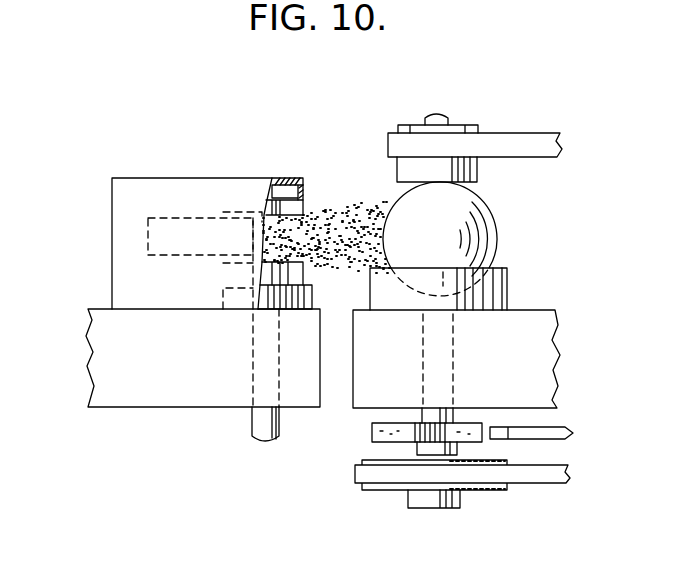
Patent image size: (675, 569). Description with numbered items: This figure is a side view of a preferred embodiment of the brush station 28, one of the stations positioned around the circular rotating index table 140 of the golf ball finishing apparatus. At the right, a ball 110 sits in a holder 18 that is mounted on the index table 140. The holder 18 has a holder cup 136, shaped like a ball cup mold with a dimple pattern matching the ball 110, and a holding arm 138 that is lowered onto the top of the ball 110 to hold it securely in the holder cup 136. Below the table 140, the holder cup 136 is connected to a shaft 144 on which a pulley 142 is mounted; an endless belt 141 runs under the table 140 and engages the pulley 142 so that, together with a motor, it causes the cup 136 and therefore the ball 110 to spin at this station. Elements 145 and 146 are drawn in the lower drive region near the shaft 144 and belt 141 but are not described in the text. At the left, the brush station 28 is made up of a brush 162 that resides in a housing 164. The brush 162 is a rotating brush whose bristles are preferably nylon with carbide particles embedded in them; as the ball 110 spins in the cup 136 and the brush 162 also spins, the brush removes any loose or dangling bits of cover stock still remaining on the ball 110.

The holder 18 is at (509, 112).
The brush station 28 is at (96, 207).
The ball 110 is at (488, 207).
The holder cup 136 is at (507, 291).
The holding arm 138 is at (527, 133).
The rotating index table 140 is at (557, 340).
The endless belt 141 is at (558, 485).
The pulley 142 is at (493, 492).
The shaft 144 is at (462, 410).
The disk 145 is at (372, 431).
The lever pin 146 is at (573, 433).
The brush 162 is at (345, 222).
The housing 164 is at (150, 178).